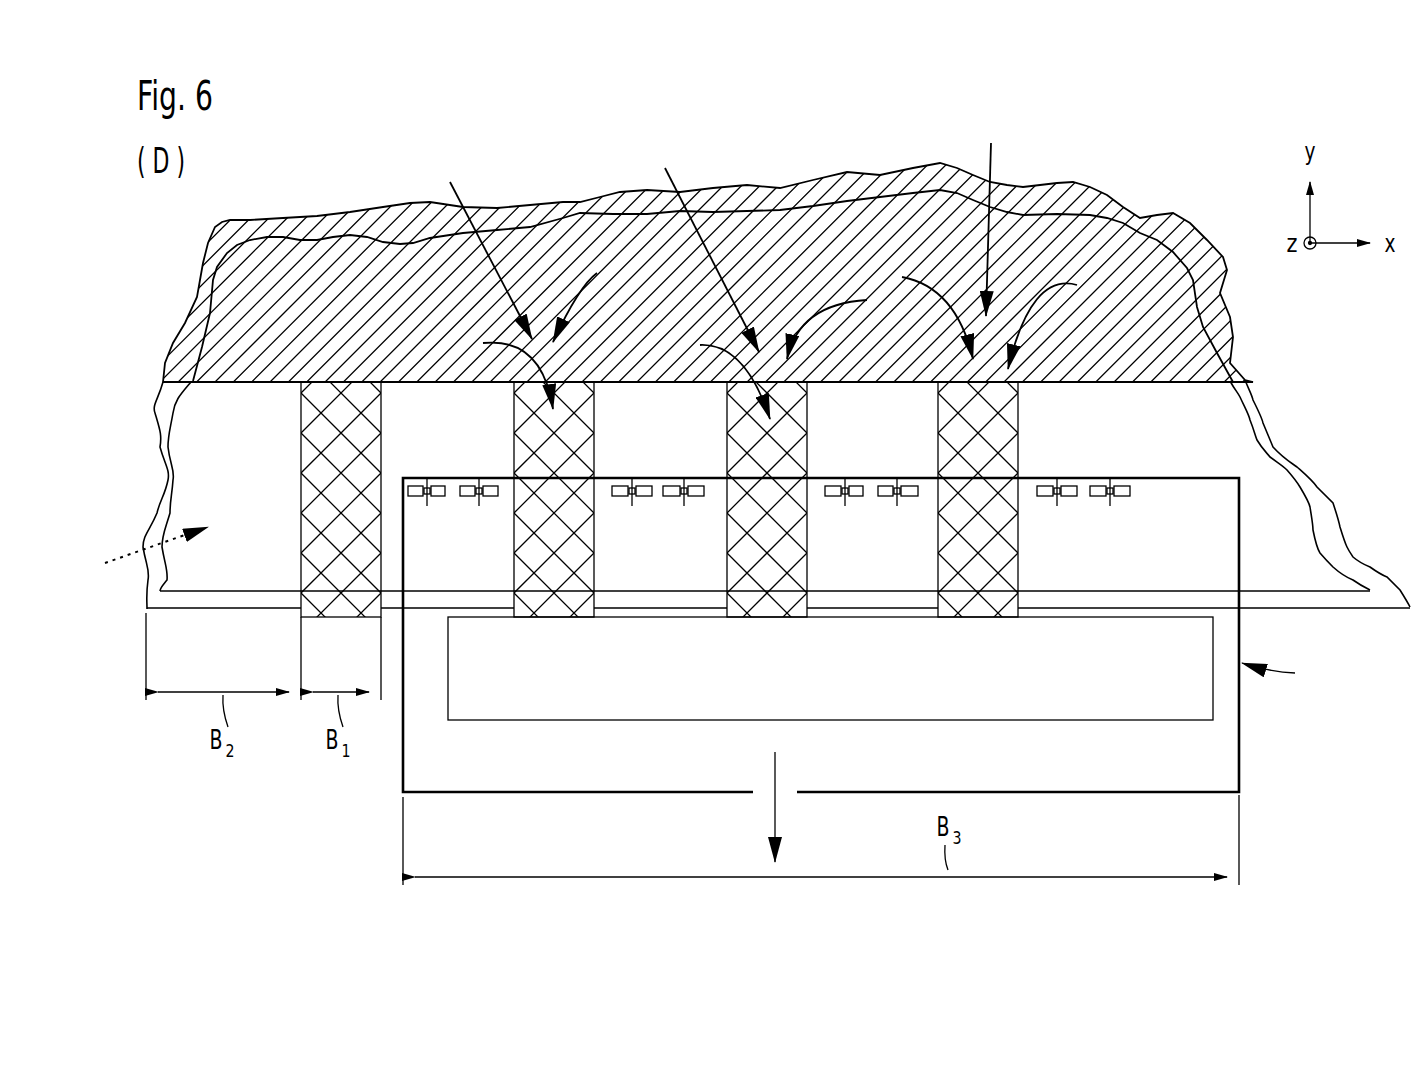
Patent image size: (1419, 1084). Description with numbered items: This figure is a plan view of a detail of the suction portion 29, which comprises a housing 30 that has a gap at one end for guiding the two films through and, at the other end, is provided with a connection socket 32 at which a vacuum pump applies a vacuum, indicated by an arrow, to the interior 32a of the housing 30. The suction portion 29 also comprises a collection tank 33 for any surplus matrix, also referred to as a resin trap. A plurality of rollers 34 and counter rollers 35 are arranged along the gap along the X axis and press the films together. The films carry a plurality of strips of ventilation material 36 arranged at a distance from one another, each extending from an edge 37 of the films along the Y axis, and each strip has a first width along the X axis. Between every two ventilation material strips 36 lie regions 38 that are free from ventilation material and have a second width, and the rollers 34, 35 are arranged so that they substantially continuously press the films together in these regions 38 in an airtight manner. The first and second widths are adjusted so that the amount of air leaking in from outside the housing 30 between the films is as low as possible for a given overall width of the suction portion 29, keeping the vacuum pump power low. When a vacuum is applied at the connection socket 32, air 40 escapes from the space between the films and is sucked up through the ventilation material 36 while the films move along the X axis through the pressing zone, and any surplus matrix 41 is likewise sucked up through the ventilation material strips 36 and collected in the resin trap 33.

The suction portion 29 is at (1281, 676).
The housing 30 is at (1240, 738).
The connection socket 32 is at (753, 793).
The interior of the housing 32a is at (868, 769).
The collection tank 33 is at (818, 681).
The rollers 34 is at (633, 498).
The counter rollers 35 is at (120, 557).
The ventilation material strips 36 is at (370, 410).
The edge of the films 37 is at (208, 592).
The regions free from ventilation material 38 is at (225, 449).
The escaping air 40 is at (623, 265).
The surplus matrix 41 is at (458, 192).